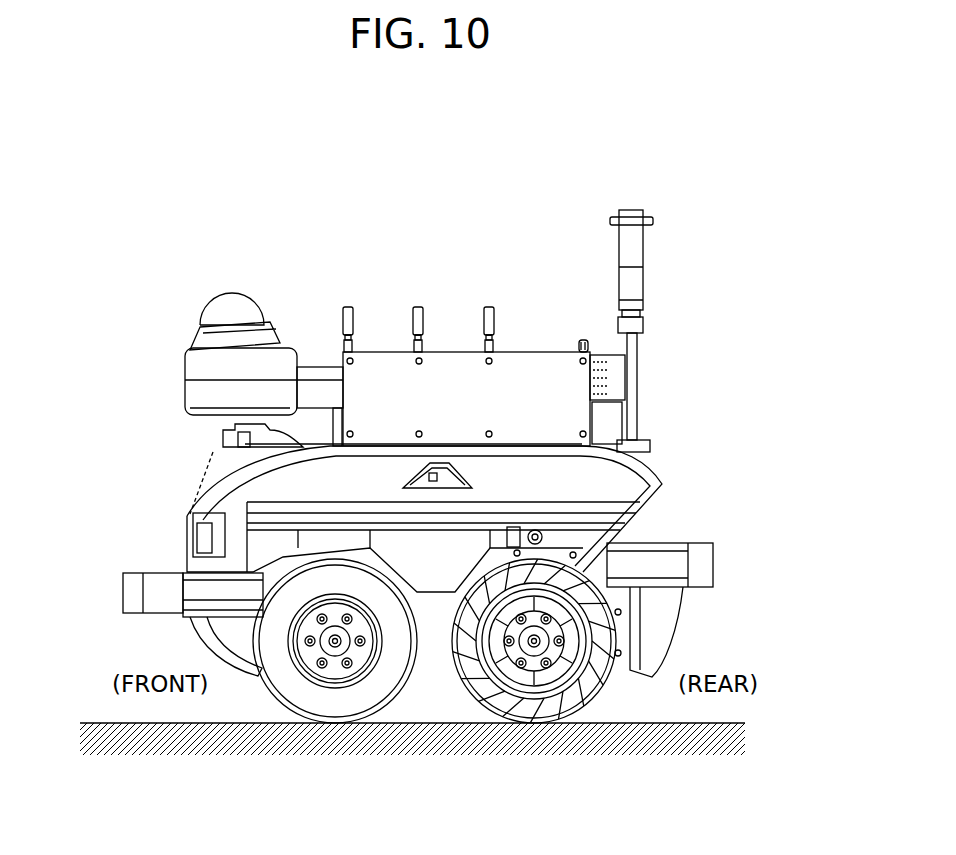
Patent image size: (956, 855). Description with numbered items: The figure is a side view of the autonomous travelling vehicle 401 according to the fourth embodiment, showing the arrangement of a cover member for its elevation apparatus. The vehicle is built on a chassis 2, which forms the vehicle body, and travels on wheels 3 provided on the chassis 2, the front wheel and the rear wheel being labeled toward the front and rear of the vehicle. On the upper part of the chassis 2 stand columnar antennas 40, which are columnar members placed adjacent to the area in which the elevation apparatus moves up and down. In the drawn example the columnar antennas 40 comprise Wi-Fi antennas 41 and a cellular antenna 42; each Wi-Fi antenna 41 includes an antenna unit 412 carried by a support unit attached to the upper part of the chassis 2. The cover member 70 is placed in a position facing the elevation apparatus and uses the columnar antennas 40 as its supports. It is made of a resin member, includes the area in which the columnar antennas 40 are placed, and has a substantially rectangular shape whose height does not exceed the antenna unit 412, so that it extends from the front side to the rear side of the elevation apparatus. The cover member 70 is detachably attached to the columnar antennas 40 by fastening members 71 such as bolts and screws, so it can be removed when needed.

The chassis 2 is at (668, 485).
The wheels 3 is at (333, 712).
The columnar antennas 40 is at (449, 257).
The Wi-Fi antennas 41 is at (345, 302).
The cellular antennas 42 is at (582, 332).
The cover member 70 is at (322, 364).
The fastening members 71 is at (350, 378).
The autonomous travelling vehicle 401 is at (672, 367).
The antenna unit 412 is at (353, 320).